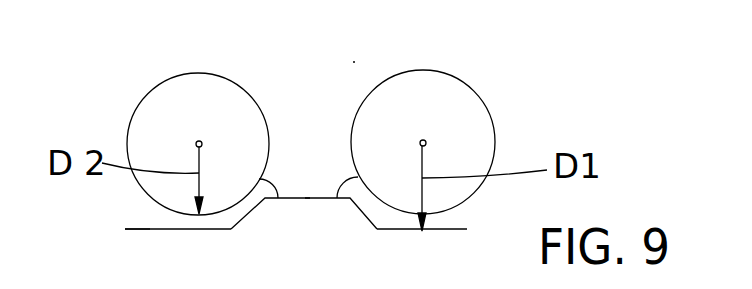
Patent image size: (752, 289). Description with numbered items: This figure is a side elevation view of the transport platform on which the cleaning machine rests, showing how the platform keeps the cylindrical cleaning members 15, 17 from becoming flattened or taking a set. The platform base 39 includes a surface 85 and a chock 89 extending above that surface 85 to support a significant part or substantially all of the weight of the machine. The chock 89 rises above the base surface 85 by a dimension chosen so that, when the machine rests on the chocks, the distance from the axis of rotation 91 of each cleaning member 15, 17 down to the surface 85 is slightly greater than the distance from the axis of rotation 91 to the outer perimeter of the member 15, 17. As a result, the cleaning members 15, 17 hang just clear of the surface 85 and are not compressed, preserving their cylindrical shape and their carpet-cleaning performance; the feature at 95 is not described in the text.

The cleaning member 15 is at (218, 73).
The cleaning member 17 is at (425, 71).
The axis of rotation 91 is at (199, 144).
The surface 85 is at (140, 228).
The platform base 39 is at (163, 231).
The chock 89 is at (278, 198).
The second ramp 95 is at (316, 198).